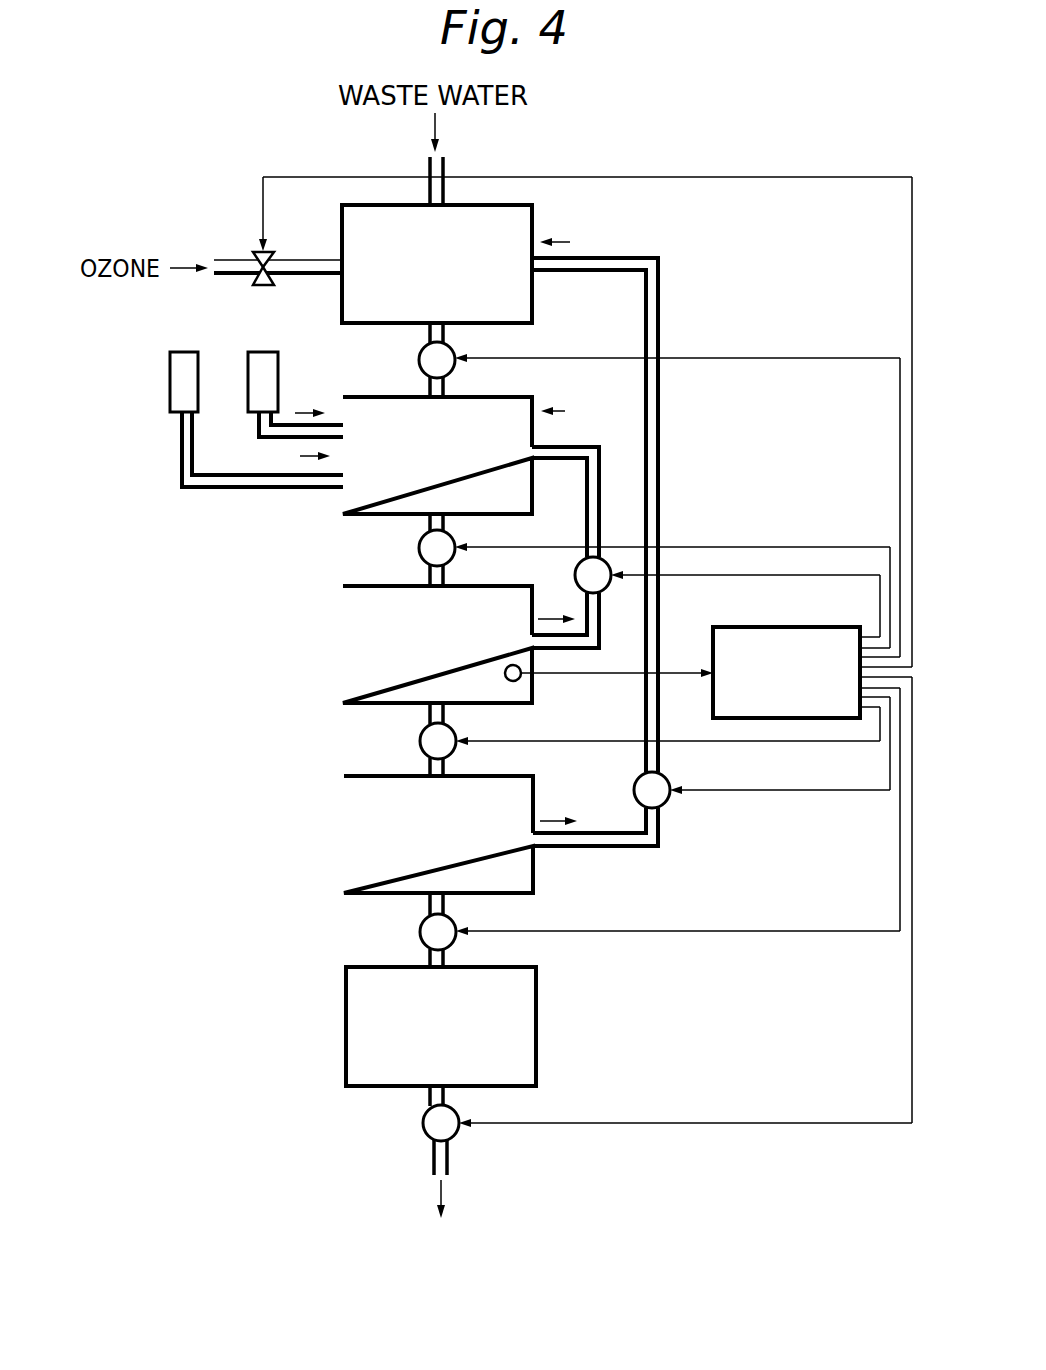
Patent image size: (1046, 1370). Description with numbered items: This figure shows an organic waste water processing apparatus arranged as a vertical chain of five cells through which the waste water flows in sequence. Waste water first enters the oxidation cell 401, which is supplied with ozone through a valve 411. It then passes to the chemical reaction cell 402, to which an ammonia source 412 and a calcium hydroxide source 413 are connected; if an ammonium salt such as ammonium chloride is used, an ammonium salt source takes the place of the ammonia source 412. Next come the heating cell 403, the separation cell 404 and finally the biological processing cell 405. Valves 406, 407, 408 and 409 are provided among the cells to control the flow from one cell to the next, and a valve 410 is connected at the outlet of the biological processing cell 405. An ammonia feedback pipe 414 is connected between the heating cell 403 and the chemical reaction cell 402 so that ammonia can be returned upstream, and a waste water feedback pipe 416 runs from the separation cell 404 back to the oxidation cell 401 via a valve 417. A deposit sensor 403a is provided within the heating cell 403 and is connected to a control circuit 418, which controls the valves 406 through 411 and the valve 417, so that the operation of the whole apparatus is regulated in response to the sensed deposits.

The oxidation cell 401 is at (534, 224).
The chemical reaction cell 402 is at (500, 396).
The heating cell 403 is at (480, 586).
The deposit sensor 403a is at (511, 666).
The separation cell 404 is at (488, 776).
The biological processing cell 405 is at (536, 1012).
The valve 406 is at (418, 361).
The valve 407 is at (418, 549).
The valve 408 is at (419, 742).
The valve 409 is at (419, 933).
The valve 410 is at (422, 1124).
The valve 411 is at (258, 257).
The ammonia source 412 is at (261, 351).
The calcium hydroxide source 413 is at (182, 351).
The ammonia feedback pipe 414 is at (586, 520).
The waste water feedback pipe 416 is at (660, 483).
The valve 417 is at (633, 790).
The control circuit 418 is at (795, 627).